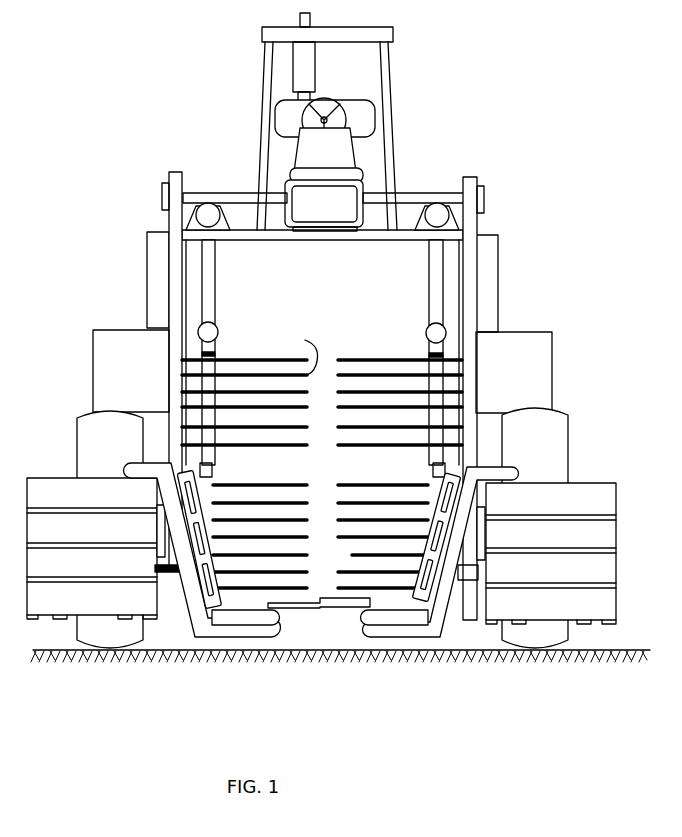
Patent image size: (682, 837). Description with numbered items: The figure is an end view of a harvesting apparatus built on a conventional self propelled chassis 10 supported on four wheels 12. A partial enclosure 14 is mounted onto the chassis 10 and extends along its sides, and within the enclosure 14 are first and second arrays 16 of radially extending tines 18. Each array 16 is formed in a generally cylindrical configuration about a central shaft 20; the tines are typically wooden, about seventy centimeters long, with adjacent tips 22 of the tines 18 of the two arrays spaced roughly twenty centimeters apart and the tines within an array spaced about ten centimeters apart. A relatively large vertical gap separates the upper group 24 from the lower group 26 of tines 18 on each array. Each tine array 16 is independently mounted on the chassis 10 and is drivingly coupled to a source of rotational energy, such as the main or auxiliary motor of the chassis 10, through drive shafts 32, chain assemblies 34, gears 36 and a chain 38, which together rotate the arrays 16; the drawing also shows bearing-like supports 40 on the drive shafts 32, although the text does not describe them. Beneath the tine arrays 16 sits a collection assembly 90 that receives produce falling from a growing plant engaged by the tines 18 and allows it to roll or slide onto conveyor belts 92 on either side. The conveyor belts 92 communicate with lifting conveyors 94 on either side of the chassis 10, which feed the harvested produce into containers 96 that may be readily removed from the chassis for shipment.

The self propelled chassis 10 is at (184, 213).
The wheels 12 is at (83, 435).
The partial enclosure 14 is at (96, 356).
The arrays of tines 16 is at (252, 341).
The tines 18 is at (392, 373).
The central shaft 20 is at (216, 345).
The tips 22 is at (305, 355).
The upper group of tines 24 is at (340, 455).
The lower group of tines 26 is at (273, 480).
The drive shafts 32 is at (194, 200).
The chain assemblies 34 is at (178, 173).
The gears 36 is at (156, 518).
The chain 38 is at (156, 532).
The bearings 40 is at (213, 212).
The collection assembly 90 is at (352, 555).
The conveyor belts 92 is at (244, 617).
The lifting conveyors 94 is at (200, 597).
The containers 96 is at (43, 488).